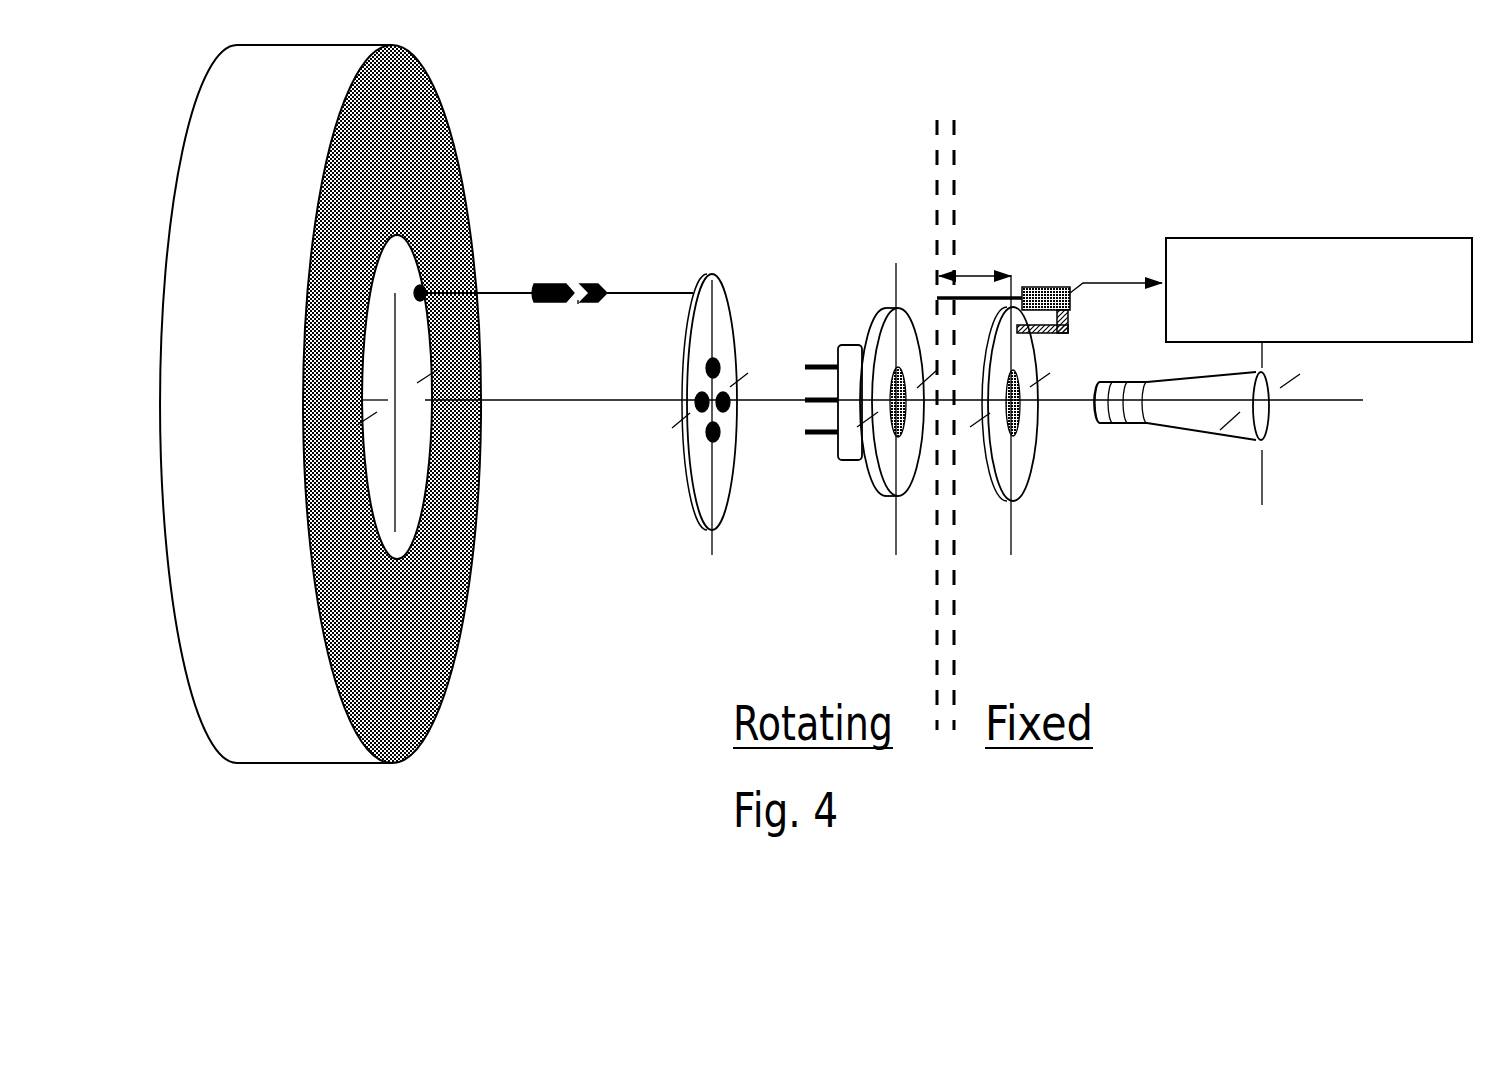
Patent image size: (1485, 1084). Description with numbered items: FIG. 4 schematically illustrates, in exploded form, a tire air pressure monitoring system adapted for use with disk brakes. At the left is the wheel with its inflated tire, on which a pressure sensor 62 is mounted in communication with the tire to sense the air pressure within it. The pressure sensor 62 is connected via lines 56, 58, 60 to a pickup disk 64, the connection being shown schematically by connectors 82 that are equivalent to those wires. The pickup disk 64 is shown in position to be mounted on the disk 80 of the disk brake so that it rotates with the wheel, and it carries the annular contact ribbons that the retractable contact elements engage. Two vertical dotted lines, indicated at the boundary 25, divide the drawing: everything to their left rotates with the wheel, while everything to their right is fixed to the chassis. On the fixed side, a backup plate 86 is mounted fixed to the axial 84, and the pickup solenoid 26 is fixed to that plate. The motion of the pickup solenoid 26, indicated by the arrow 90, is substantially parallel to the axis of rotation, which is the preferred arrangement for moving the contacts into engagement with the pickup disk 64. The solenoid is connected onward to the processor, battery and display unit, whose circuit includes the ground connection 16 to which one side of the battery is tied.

The pressure sensor 62 is at (432, 277).
The line 56 is at (563, 243).
The line 58 is at (553, 293).
The line 60 is at (636, 293).
The connectors 82 is at (578, 306).
The pickup disk 64 is at (704, 273).
The disk of the disk brake 80 is at (853, 341).
The rotating/fixed boundary 25 is at (937, 291).
The arrow 90 is at (981, 267).
The pickup solenoid 26 is at (1055, 281).
The backup plate 86 is at (1033, 461).
The ground 16 is at (1271, 303).
The axial 84 is at (1189, 441).